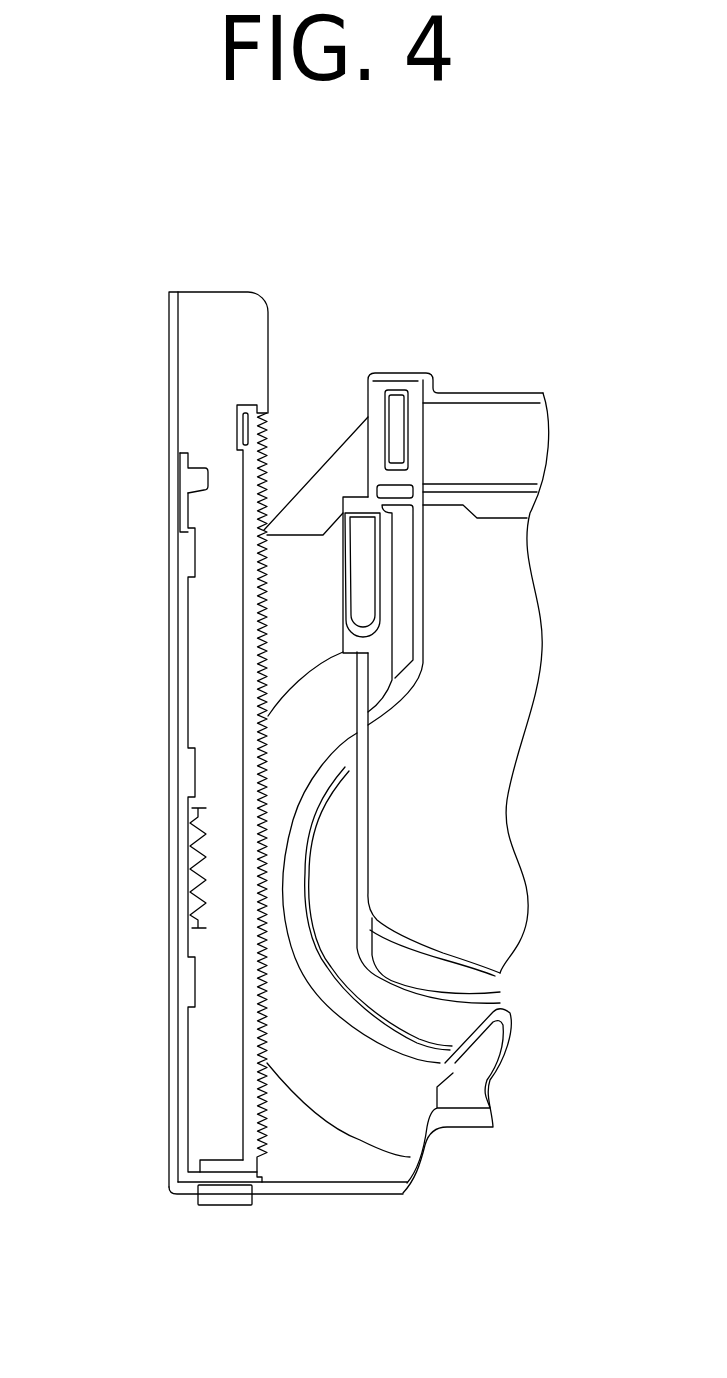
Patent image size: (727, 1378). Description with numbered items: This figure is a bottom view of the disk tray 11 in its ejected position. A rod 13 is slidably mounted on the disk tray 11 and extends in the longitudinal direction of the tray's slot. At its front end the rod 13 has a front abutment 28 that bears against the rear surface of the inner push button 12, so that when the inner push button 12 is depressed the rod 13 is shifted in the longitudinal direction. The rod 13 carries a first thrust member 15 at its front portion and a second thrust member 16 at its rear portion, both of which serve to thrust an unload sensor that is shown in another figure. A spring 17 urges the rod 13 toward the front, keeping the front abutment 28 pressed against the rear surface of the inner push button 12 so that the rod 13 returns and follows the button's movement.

The disk tray 11 is at (330, 722).
The inner push button 12 is at (225, 1205).
The rod 13 is at (168, 630).
The first thrust member 15 is at (193, 1162).
The second thrust member 16 is at (198, 468).
The spring 17 is at (190, 870).
The front abutment 28 is at (262, 1178).